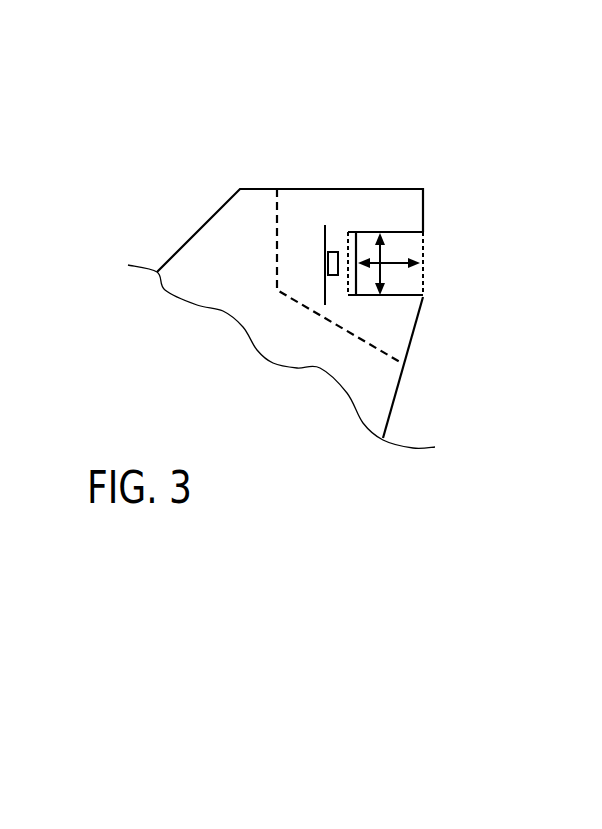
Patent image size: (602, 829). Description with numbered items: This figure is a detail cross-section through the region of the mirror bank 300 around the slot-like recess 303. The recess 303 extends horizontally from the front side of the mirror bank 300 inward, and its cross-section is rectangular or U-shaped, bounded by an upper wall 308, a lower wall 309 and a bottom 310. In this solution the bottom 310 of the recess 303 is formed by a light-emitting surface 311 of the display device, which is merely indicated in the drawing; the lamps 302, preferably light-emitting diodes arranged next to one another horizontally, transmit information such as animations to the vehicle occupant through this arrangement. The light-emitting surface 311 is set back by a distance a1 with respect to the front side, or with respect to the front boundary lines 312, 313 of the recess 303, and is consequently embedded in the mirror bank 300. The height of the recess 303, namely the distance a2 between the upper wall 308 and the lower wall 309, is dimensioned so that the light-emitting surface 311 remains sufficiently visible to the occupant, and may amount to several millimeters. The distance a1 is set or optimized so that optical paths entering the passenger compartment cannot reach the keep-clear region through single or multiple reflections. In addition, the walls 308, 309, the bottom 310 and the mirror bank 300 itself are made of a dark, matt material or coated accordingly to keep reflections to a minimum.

The mirror bank 300 is at (233, 178).
The lamps 302 is at (277, 247).
The slot-like recess 303 is at (364, 307).
The upper wall 308 is at (394, 232).
The lower wall 309 is at (397, 295).
The bottom 310 is at (356, 252).
The light-emitting surface 311 is at (351, 263).
The front boundary line 312 is at (423, 232).
The front boundary line 313 is at (423, 297).
The distance a1 is at (381, 254).
The distance a2 is at (387, 263).